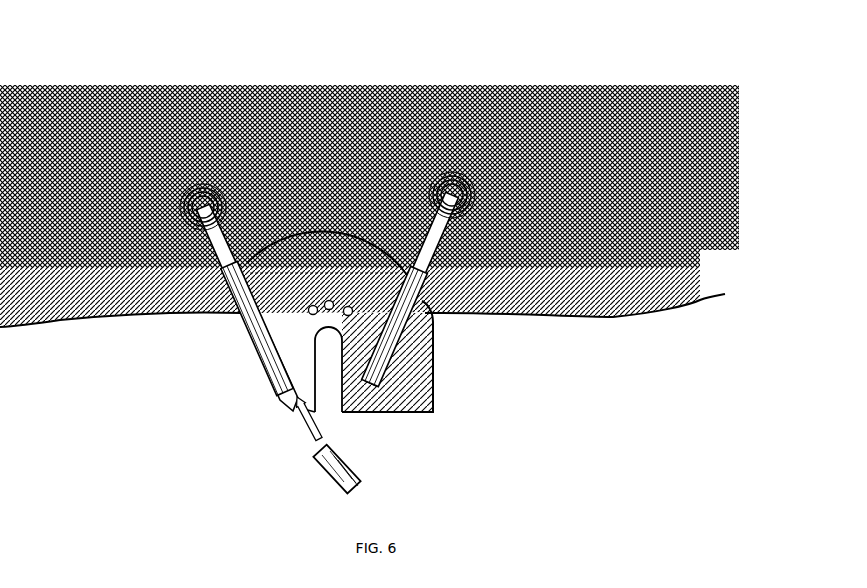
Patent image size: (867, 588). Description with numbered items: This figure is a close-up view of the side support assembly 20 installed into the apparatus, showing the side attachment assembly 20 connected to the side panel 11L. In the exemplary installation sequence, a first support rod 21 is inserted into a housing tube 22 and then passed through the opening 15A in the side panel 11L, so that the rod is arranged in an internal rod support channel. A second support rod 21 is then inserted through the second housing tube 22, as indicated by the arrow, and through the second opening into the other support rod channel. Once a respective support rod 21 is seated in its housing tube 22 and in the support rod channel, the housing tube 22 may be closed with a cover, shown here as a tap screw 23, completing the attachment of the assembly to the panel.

The side panel 11L is at (473, 115).
The opening 15A is at (481, 185).
The side support assembly 20 is at (482, 387).
The support rod 21 is at (211, 239).
The housing tube 22 is at (262, 358).
The tap screw 23 is at (363, 478).